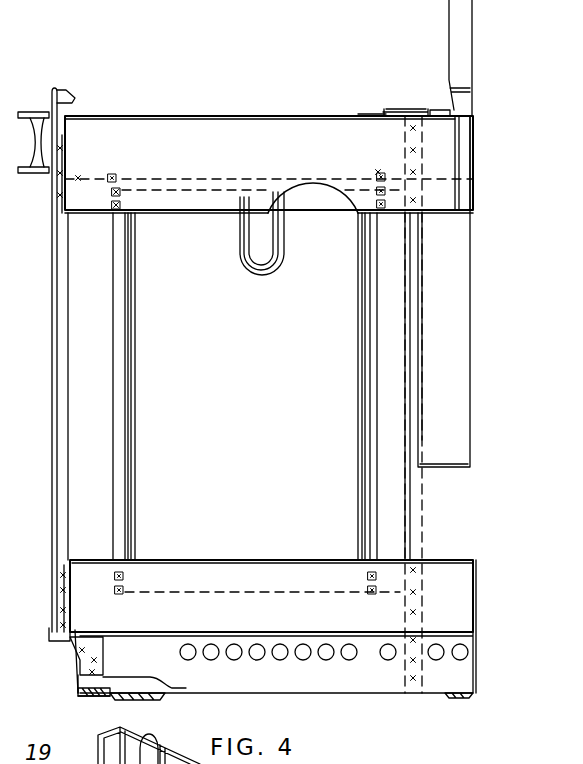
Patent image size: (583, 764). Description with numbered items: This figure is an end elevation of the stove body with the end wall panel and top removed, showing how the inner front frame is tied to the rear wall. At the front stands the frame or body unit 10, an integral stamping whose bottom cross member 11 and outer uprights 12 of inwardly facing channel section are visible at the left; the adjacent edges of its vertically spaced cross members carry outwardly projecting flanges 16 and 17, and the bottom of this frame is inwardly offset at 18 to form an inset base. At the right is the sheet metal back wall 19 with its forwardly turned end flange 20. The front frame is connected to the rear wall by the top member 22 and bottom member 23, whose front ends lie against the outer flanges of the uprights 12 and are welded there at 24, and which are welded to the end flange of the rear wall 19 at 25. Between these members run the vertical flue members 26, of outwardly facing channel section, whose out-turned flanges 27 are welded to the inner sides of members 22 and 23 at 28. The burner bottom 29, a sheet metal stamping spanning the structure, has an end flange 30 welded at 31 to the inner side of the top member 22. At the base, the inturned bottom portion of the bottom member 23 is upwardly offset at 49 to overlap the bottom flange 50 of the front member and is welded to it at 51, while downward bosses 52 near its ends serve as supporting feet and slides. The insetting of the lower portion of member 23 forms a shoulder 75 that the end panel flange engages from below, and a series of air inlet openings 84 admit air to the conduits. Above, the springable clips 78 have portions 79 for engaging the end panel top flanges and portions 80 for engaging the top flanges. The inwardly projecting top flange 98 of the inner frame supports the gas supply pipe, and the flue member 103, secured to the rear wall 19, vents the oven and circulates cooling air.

The frame or body unit 10 is at (52, 300).
The bottom cross member 11 is at (78, 686).
The outer uprights 12 is at (56, 340).
The outwardly projecting flange 16 is at (30, 176).
The outwardly projecting flange 17 is at (24, 112).
The inwardly offset bottom portion 18 is at (78, 668).
The back wall 19 is at (424, 316).
The forwardly turned flanges 20 is at (416, 398).
The top member 22 is at (203, 128).
The bottom member 23 is at (240, 562).
The weld 24 is at (52, 196).
The weld 25 is at (414, 167).
The vertical flue members 26 is at (136, 402).
The out-turned flanges 27 is at (118, 462).
The weld 28 is at (111, 205).
The burner bottom 29 is at (225, 178).
The end flanges 30 is at (84, 176).
The weld 31 is at (114, 176).
The upwardly offset portion 49 is at (105, 693).
The bottom flange 50 is at (82, 700).
The weld 51 is at (95, 704).
The downward bosses 52 is at (155, 701).
The shoulders 75 is at (375, 634).
The clips 78 is at (366, 113).
The clip portions 79 is at (372, 111).
The clip portions 80 is at (397, 106).
The air inlet openings 84 is at (303, 660).
The inwardly projecting top flange 98 is at (70, 96).
The flue member 103 is at (463, 56).